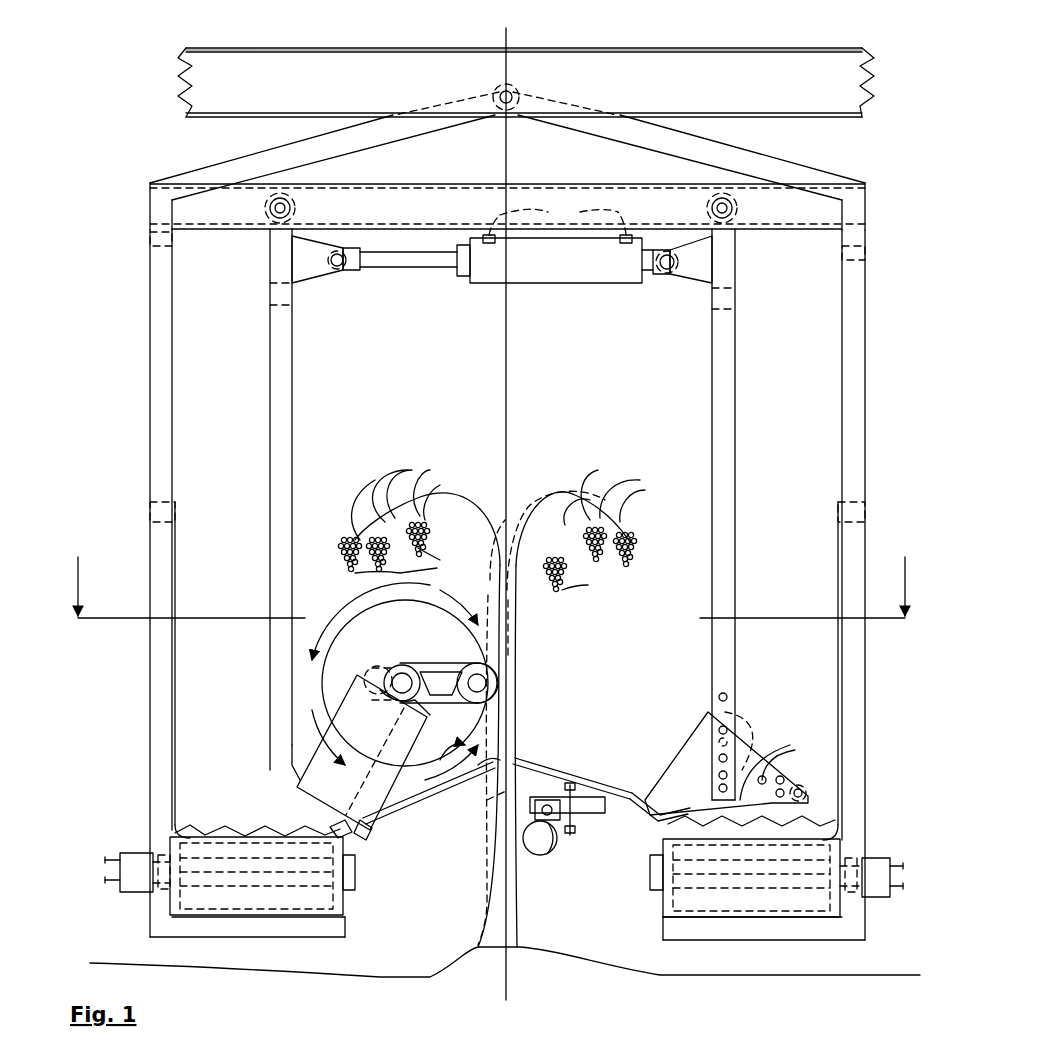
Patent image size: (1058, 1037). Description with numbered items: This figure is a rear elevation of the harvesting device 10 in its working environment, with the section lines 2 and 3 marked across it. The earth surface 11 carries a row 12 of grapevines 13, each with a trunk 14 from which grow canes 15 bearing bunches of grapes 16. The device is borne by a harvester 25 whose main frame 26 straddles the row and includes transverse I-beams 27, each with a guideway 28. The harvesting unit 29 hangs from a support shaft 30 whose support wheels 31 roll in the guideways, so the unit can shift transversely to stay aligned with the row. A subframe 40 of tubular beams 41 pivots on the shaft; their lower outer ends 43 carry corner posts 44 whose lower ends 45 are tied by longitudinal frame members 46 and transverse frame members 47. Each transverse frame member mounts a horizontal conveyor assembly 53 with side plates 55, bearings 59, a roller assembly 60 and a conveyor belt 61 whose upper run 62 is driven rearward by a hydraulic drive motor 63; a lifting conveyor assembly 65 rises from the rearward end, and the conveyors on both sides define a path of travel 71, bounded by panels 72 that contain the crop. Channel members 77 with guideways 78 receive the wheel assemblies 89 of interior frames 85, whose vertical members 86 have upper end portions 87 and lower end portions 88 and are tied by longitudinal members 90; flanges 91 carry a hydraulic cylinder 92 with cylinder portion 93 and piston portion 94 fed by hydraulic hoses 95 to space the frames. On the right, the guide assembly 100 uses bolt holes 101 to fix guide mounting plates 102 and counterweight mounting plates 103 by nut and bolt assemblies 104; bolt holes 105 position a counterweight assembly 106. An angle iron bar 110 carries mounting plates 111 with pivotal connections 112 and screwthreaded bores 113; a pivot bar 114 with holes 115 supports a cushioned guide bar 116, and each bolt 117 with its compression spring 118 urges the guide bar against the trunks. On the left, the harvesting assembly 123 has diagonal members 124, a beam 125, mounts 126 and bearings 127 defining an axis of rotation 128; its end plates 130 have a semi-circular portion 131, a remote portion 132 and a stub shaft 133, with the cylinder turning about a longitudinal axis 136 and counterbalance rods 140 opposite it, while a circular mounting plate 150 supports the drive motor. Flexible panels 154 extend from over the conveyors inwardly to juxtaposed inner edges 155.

The section line 2- 2 is at (508, 32).
The section line 3- 3 is at (490, 575).
The harvesting device 10 is at (140, 660).
The earth surface 11 is at (378, 975).
The row 12 is at (515, 930).
The grapevines 13 is at (512, 718).
The trunk 14 is at (495, 818).
The canes 15 is at (498, 499).
The grapes 16 is at (487, 558).
The carrying vehicle or harvester 25 is at (760, 40).
The main frame 26 is at (225, 47).
The I-beams 27 is at (312, 66).
The guideway 28 is at (526, 82).
The harvesting unit 29 is at (878, 208).
The support shaft 30 is at (503, 105).
The support wheels 31 is at (520, 83).
The subframe 40 is at (745, 160).
The tubular beams 41 is at (260, 157).
The lower outer ends 43 is at (160, 183).
The corner posts 44 is at (150, 345).
The lower ends 45 is at (150, 922).
The longitudinal frame members 46 is at (150, 238).
The transverse frame member 47 is at (300, 935).
The horizontal conveyor assembly 53 is at (356, 858).
The side plates 55 is at (350, 912).
The bearings 59 is at (163, 888).
The roller assembly 60 is at (200, 845).
The conveyor belt 61 is at (258, 917).
The upper run 62 is at (228, 832).
The hydraulic drive motor 63 is at (135, 850).
The lifting conveyor assembly 65 is at (320, 820).
The path of travel 71 is at (501, 915).
The panel 72 is at (176, 560).
The channel members 77 is at (405, 185).
The guideway 78 is at (325, 222).
The interior frames 85 is at (262, 338).
The vertical members 86 is at (292, 377).
The upper end portions 87 is at (270, 243).
The lower end portions 88 is at (270, 730).
The wheel assemblies 89 is at (298, 200).
The longitudinal members 90 is at (278, 297).
The flanges 91 is at (312, 272).
The hydraulic cylinder 92 is at (463, 285).
The cylinder portion 93 is at (555, 260).
The piston portion 94 is at (403, 268).
The hydraulic hoses 95 is at (557, 219).
The guide assembly 100 is at (562, 855).
The bolt holes 101 is at (727, 698).
The guide mounting plates 102 is at (726, 763).
The counterweight mounting plates 103 is at (791, 761).
The nut and bolt assemblies 104 is at (720, 758).
The bolt holes 105 is at (800, 772).
The counterweight assembly 106 is at (810, 782).
The angle iron bar 110 is at (612, 812).
The mounting plates 111 is at (590, 818).
The pivotal connection 112 is at (542, 856).
The screwthreaded bore 113 is at (575, 812).
The pivot bar 114 is at (535, 805).
The holes 115 is at (540, 775).
The cushioned guide bar 116 is at (523, 840).
The bolt 117 is at (565, 780).
The compression spring 118 is at (572, 782).
The harvesting assembly 123 is at (520, 620).
The diagonal members 124 is at (290, 768).
The beam 125 is at (370, 832).
The mount 126 is at (365, 775).
The bearing 127 is at (407, 705).
The axis of rotation 128 is at (402, 670).
The end plates 130 is at (434, 660).
The semi-circular portion 131 is at (384, 668).
The remote portion 132 is at (490, 690).
The stub shaft 133 is at (448, 705).
The longitudinal axis 136 is at (480, 673).
The counterbalance rods 140 is at (372, 670).
The circular mounting plate 150 is at (355, 620).
The flexible panels 154 is at (418, 790).
The inner edges 155 is at (492, 770).